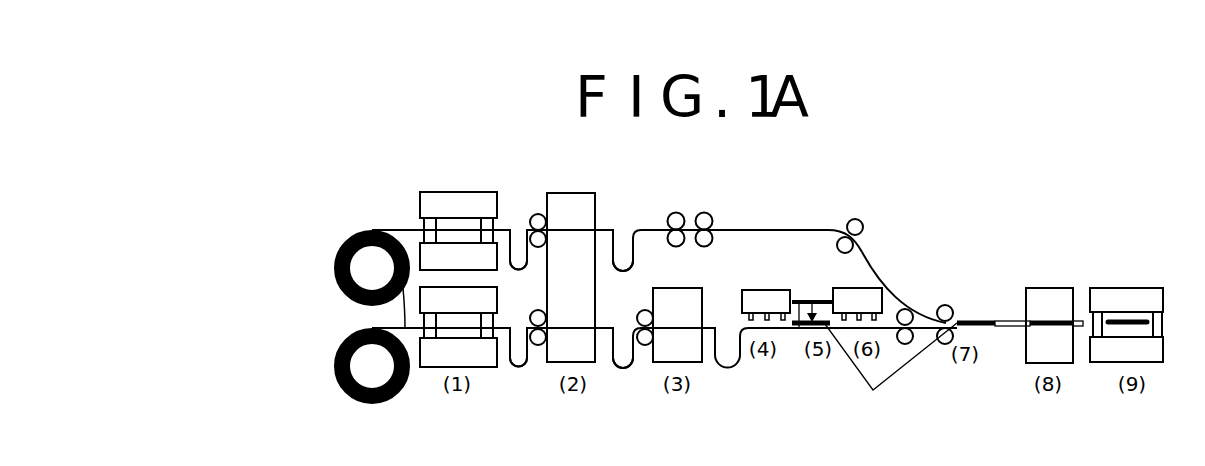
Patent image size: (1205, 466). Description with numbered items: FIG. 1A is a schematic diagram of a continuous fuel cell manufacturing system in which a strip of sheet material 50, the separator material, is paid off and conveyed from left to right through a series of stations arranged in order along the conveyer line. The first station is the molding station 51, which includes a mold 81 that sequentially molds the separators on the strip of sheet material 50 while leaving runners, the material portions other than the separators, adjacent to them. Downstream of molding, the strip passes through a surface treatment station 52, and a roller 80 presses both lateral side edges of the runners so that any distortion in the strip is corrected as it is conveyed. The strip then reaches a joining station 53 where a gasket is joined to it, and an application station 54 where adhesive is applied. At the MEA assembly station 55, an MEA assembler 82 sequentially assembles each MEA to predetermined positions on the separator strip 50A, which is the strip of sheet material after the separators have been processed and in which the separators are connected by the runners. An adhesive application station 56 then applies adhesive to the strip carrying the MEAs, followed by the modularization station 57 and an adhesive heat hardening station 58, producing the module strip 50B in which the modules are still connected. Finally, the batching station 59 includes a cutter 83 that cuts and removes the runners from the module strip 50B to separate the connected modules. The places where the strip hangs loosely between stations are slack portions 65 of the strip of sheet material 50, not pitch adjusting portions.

The strip of sheet material 50 is at (398, 230).
The separator strip 50A is at (888, 327).
The module strip 50B is at (1010, 318).
The molding station 51 is at (483, 367).
The surface treatment station 52 is at (573, 193).
The joining station 53 is at (665, 288).
The application station 54 is at (763, 290).
The MEA assembly station 55 is at (799, 327).
The adhesive application station 56 is at (866, 288).
The modularization station 57 is at (981, 327).
The adhesive heat hardening station 58 is at (1050, 288).
The batching station 59 is at (1103, 352).
The slack portions 65 is at (614, 232).
The roller 80 is at (715, 248).
The mold 81 is at (457, 260).
The MEA assembler 82 is at (822, 302).
The cutter 83 is at (1120, 288).
The membrane electrode assembly MEA is at (891, 371).